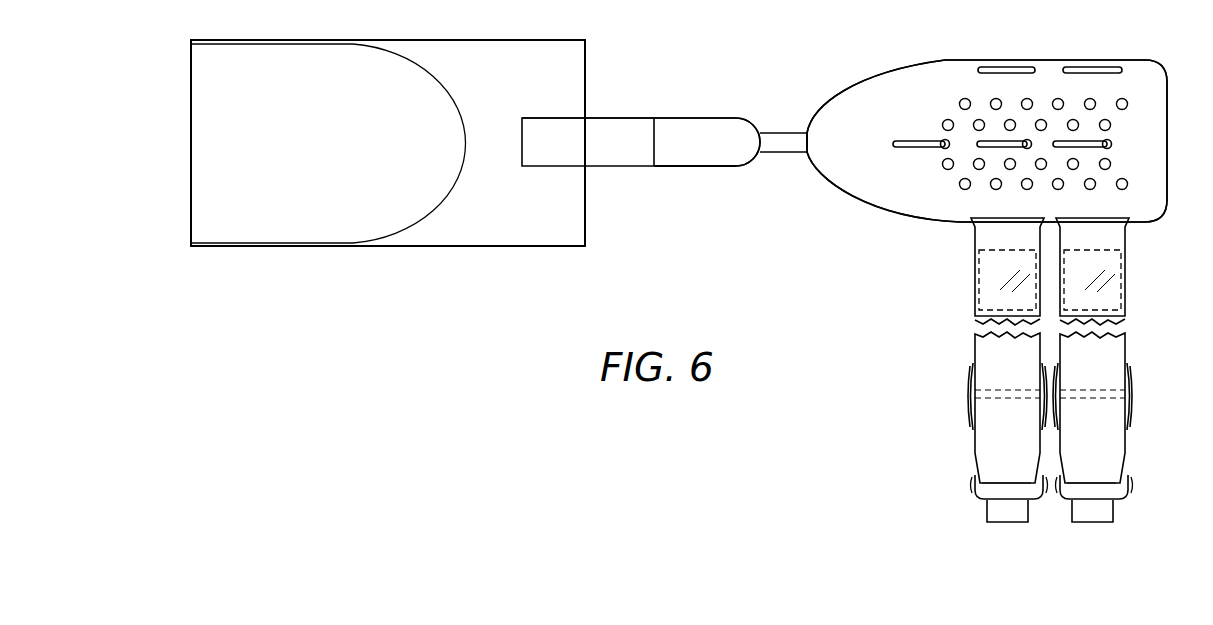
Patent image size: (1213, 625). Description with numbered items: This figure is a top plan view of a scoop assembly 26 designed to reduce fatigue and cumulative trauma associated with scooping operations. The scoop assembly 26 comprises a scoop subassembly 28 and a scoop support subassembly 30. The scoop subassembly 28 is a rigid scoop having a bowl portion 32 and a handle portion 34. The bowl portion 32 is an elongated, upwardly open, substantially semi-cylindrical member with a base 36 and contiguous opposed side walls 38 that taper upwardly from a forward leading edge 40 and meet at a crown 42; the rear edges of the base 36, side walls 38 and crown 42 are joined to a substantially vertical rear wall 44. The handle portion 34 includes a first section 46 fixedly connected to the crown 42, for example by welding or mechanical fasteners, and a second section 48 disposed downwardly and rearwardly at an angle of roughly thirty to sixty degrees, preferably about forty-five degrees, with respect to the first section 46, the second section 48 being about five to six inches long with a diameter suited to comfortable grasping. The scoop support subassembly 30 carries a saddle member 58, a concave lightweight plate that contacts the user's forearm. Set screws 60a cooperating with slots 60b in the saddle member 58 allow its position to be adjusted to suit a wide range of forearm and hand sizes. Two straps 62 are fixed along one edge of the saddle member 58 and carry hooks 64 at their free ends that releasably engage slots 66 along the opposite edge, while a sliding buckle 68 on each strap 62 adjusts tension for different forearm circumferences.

The scoop assembly 26 is at (712, 215).
The scoop subassembly 28 is at (672, 93).
The scoop support subassembly 30 is at (821, 70).
The bowl portion 32 is at (489, 253).
The handle portion 34 is at (592, 114).
The base 36 is at (270, 157).
The side walls 38 is at (412, 247).
The leading edge 40 is at (191, 175).
The crown 42 is at (580, 197).
The rear wall 44 is at (585, 233).
The first section 46 is at (620, 155).
The second section 48 is at (707, 155).
The saddle member 58 is at (915, 82).
The set screws 60a is at (945, 148).
The slots 60b is at (917, 142).
The straps 62 is at (990, 353).
The hooks 64 is at (993, 510).
The slots 66 is at (1007, 72).
The sliding buckle 68 is at (968, 395).